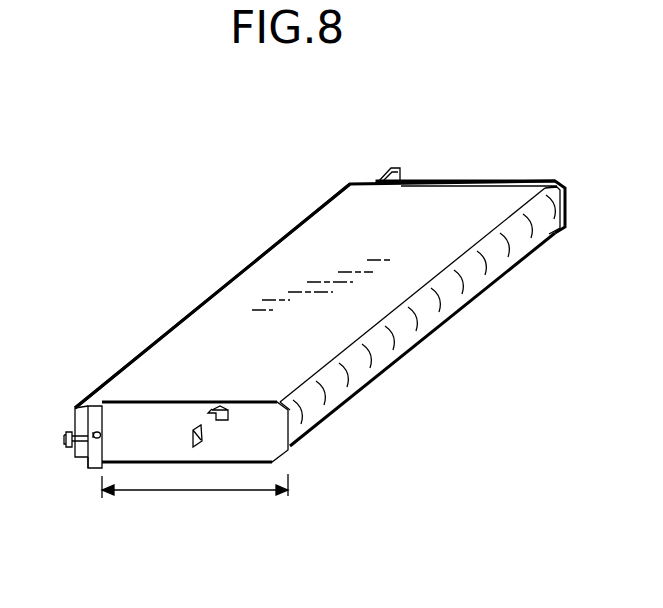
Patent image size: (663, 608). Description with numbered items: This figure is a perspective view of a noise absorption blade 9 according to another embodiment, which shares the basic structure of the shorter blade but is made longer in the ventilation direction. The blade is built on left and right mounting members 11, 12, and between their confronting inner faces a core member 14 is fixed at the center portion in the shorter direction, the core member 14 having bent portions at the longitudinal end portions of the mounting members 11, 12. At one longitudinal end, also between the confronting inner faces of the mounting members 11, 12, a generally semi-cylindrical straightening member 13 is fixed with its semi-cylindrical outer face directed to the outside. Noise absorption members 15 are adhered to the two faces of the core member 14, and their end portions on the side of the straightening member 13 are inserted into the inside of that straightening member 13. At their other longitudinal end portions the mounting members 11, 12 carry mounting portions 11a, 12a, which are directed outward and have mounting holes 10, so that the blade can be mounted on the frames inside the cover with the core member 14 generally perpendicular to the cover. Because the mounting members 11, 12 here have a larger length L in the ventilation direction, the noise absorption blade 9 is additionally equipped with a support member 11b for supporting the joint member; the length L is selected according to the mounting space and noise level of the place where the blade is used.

The noise absorption blade 9 is at (296, 199).
The mounting hole 10 is at (105, 435).
The left mounting member 11 is at (272, 448).
The mounting portion 11a is at (98, 417).
The support member 11b is at (197, 430).
The right mounting member 12 is at (528, 178).
The mounting portion 12a is at (399, 166).
The straightening member 13 is at (442, 302).
The core member 14 is at (82, 433).
The noise absorption member 15 is at (270, 262).
The length L is at (184, 492).